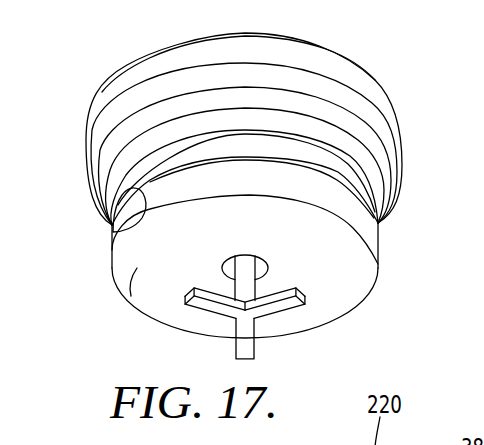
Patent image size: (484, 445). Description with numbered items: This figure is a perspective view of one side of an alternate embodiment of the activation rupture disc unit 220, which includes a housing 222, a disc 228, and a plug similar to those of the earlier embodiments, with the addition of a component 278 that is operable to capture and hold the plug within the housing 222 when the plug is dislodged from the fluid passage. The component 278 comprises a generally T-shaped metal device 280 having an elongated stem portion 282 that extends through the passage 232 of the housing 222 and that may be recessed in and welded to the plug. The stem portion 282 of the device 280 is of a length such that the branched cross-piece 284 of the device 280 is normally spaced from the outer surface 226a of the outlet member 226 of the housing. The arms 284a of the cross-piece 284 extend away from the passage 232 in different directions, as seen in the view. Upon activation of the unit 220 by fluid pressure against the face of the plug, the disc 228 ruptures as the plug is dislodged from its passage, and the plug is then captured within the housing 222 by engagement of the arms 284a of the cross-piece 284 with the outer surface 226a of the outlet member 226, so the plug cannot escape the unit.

The activation rupture disc unit 220 is at (152, 34).
The housing 222 is at (375, 68).
The disc 228 is at (112, 230).
The outlet member 226 is at (372, 229).
The outer surface 226a is at (130, 293).
The passage 232 is at (233, 258).
The stem portion 282 is at (254, 284).
The component 278 is at (316, 304).
The T-shaped metal device 280 is at (195, 317).
The cross-piece 284 is at (283, 318).
The arms 284a is at (234, 352).